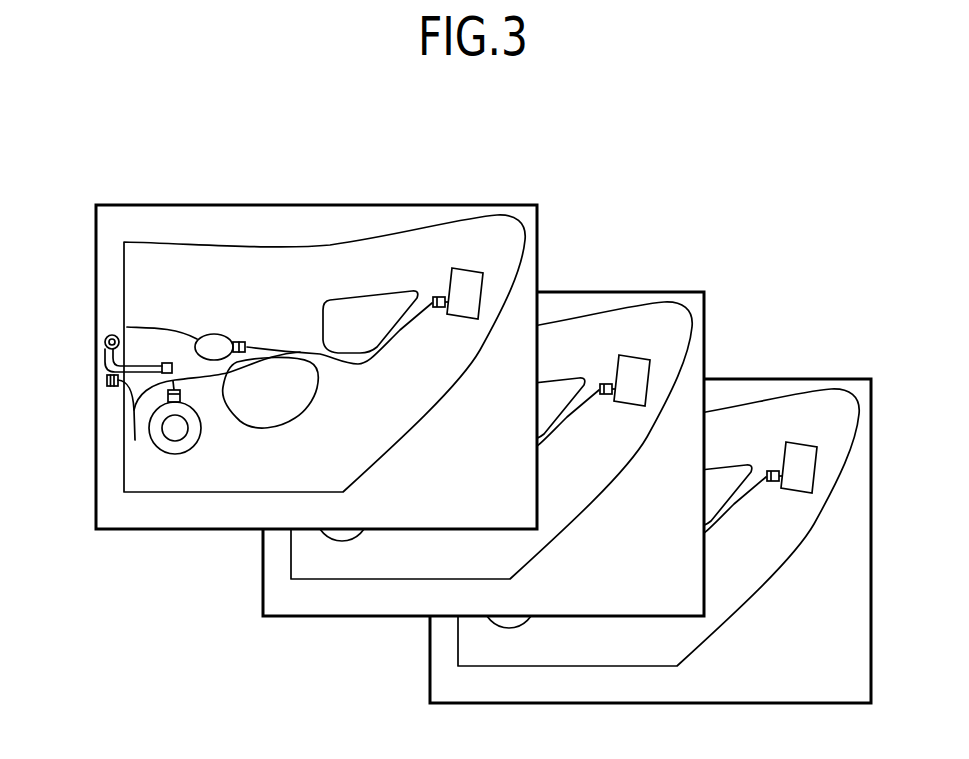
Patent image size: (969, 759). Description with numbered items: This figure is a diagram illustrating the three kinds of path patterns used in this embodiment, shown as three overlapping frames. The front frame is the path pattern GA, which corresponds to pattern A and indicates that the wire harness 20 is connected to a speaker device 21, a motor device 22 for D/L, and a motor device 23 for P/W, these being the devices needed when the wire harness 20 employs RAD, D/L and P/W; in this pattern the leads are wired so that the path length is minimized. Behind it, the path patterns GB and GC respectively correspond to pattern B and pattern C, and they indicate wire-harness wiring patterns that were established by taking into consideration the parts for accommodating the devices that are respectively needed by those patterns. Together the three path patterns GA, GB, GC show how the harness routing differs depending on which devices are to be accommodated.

The path pattern GA is at (452, 207).
The path pattern GB is at (664, 292).
The path pattern GC is at (830, 378).
The wire harness 20 is at (299, 352).
The speaker device 21 is at (158, 444).
The motor device for D/L 22 is at (127, 327).
The motor device for P/W 23 is at (483, 292).